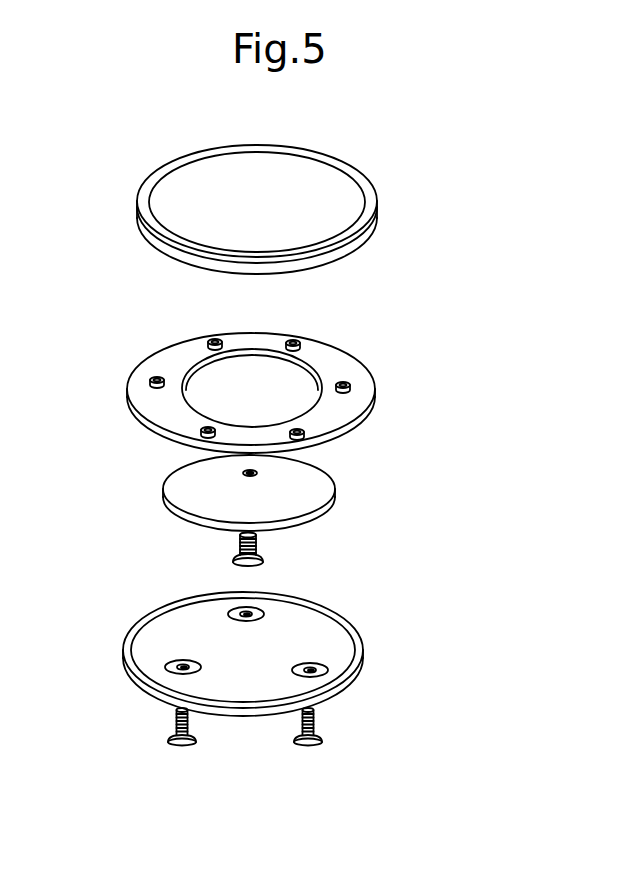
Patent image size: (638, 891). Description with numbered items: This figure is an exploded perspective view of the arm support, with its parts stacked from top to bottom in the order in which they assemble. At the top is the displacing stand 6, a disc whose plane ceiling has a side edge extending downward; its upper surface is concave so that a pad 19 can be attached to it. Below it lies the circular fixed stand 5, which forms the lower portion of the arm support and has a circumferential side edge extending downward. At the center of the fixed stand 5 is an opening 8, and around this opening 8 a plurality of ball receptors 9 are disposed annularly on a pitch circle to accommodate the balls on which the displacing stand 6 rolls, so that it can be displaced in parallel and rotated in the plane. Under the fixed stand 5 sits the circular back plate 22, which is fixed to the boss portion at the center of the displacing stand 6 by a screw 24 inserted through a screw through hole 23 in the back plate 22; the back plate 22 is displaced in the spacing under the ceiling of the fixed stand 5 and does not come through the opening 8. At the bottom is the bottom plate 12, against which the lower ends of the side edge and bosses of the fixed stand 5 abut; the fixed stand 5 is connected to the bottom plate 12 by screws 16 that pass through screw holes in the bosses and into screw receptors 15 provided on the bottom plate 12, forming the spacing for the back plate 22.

The fixed stand 5 is at (355, 402).
The displacing stand 6 is at (366, 223).
The opening 8 is at (192, 383).
The ball receptors 9 is at (210, 340).
The bottom plate 12 is at (340, 660).
The screw receptor 15 is at (313, 667).
The screw 16 is at (170, 720).
The pad 19 is at (347, 185).
The back plate 22 is at (303, 497).
The screw through hole 23 is at (250, 476).
The screw 24 is at (257, 543).